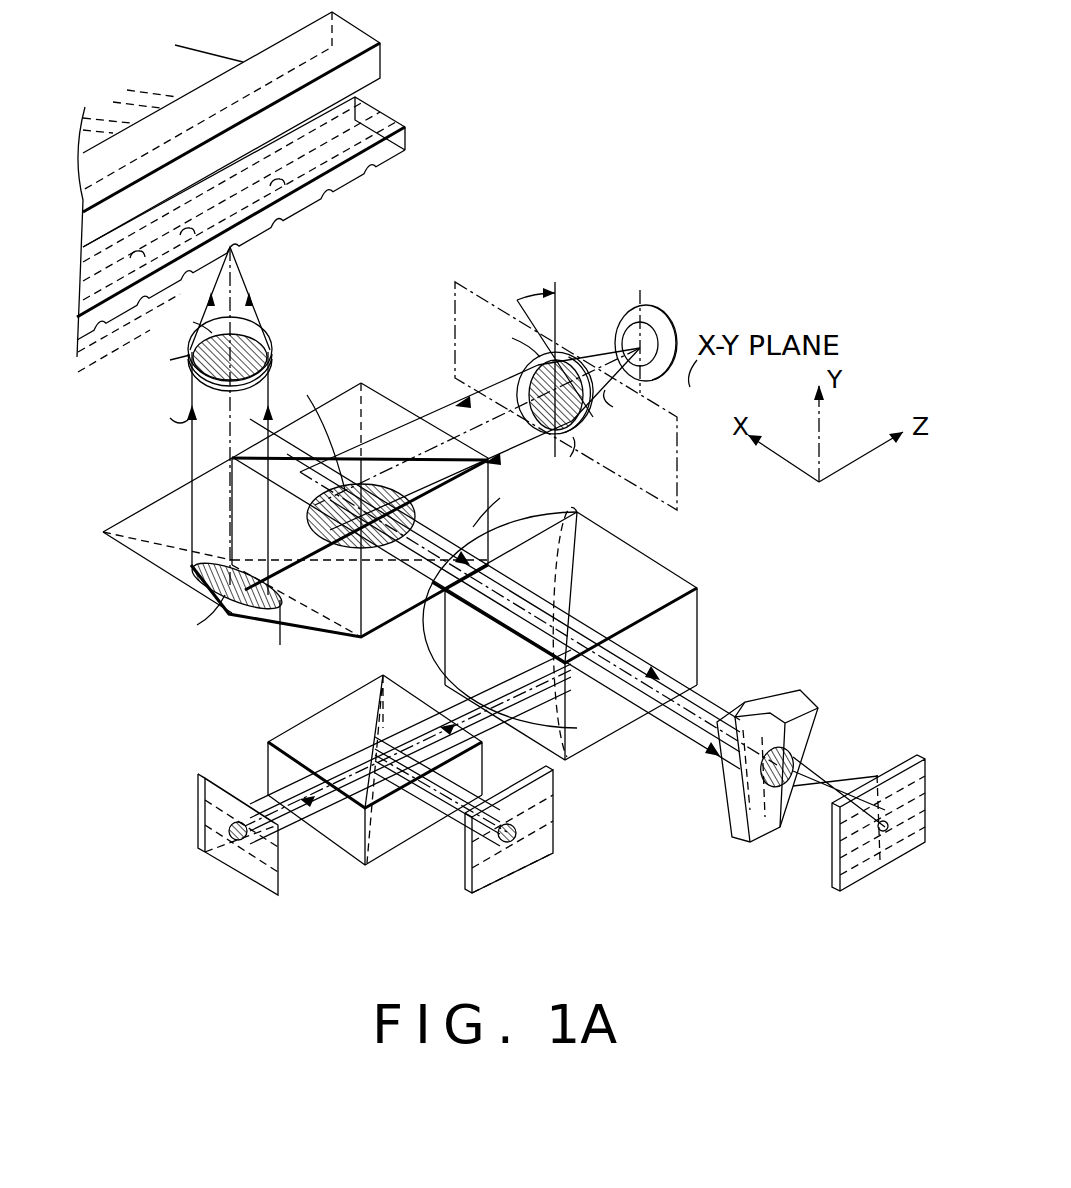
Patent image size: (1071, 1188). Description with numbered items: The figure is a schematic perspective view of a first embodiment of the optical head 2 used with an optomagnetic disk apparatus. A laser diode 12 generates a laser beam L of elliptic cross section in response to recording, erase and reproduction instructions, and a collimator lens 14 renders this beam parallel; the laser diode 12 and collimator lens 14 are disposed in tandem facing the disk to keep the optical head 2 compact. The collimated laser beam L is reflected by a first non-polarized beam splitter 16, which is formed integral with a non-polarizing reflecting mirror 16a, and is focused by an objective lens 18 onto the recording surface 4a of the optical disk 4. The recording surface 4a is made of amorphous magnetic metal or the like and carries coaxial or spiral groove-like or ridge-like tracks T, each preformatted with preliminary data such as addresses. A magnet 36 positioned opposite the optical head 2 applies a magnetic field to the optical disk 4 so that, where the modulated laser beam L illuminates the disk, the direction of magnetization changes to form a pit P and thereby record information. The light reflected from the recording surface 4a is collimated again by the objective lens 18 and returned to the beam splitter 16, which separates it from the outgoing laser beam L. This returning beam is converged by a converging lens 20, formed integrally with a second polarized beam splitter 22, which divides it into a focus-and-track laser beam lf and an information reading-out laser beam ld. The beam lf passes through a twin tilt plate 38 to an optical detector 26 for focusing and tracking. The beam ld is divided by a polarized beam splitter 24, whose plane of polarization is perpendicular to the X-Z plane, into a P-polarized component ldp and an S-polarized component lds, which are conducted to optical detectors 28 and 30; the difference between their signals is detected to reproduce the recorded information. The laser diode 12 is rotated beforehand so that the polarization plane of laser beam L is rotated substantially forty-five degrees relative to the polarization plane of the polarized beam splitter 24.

The optical head 2 is at (760, 563).
The optical disk 4 is at (405, 142).
The recording surface 4a is at (393, 160).
The tracks T is at (327, 193).
The pit P is at (277, 178).
The magnet 36 is at (380, 62).
The laser diode 12 is at (658, 312).
The collimator lens 14 is at (560, 352).
The first non-polarized beam splitter 16 is at (382, 397).
The non-polarizing reflecting mirror 16a is at (152, 503).
The objective lens 18 is at (270, 350).
The converging lens 20 is at (553, 508).
The second polarized beam splitter 22 is at (655, 558).
The polarized beam splitter 24 is at (403, 835).
The optical detector 26 is at (832, 887).
The optical detector 28 is at (540, 860).
The optical detector 30 is at (278, 877).
The twin tilt plate 38 is at (805, 692).
The laser beam L is at (380, 461).
The focus-and-track laser beam lf is at (710, 702).
The information reading-out laser beam ld is at (488, 723).
The S-polarized light component lds is at (523, 833).
The P-polarized light component ldp is at (233, 840).